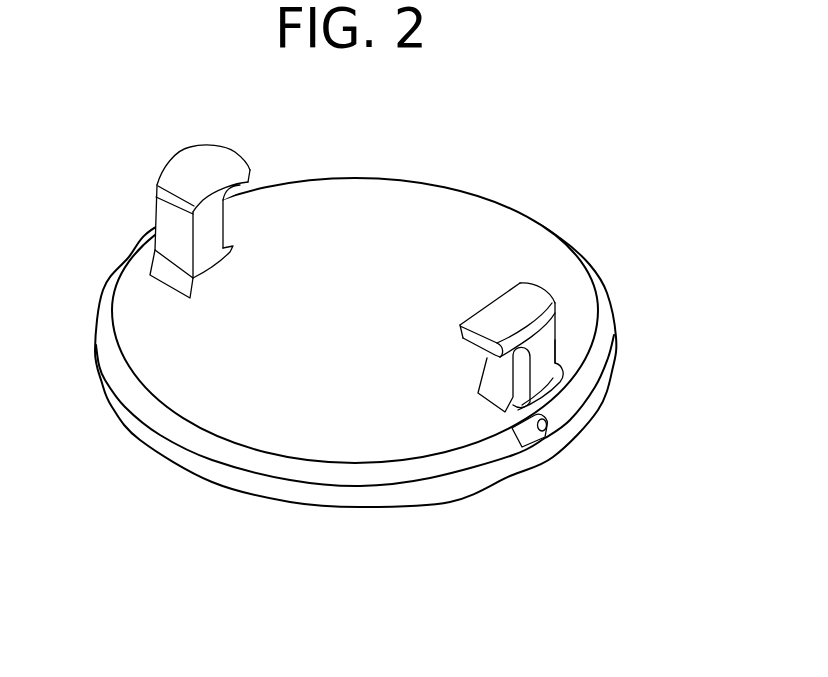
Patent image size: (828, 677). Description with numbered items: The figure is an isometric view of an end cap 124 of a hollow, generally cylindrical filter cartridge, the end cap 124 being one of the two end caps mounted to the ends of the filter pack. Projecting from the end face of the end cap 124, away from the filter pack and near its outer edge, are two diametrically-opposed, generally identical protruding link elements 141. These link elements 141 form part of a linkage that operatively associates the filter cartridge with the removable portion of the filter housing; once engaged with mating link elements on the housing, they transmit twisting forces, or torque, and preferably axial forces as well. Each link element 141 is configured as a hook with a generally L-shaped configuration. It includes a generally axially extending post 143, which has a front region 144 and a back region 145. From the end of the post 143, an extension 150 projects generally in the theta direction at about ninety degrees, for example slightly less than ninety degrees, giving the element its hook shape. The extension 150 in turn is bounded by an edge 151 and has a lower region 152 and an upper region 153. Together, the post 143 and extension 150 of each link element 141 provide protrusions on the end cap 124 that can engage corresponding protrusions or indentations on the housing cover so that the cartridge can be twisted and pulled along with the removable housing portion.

The end cap 124 is at (294, 412).
The link element 141 is at (167, 170).
The post 143 is at (207, 243).
The front region 144 is at (227, 218).
The back region 145 is at (170, 252).
The extension 150 is at (202, 157).
The edge 151 is at (232, 152).
The lower region 152 is at (240, 187).
The upper region 153 is at (183, 185).